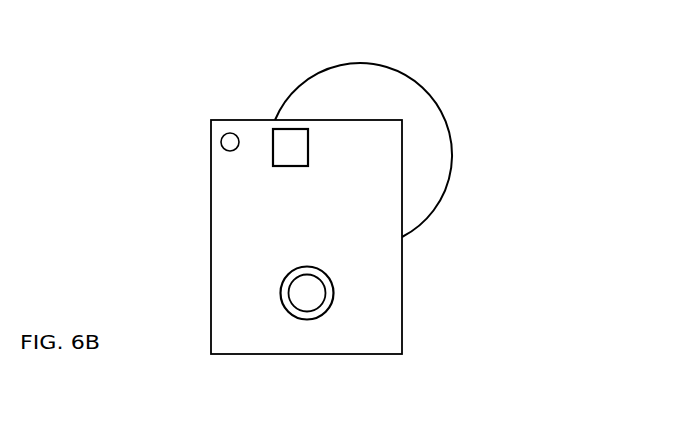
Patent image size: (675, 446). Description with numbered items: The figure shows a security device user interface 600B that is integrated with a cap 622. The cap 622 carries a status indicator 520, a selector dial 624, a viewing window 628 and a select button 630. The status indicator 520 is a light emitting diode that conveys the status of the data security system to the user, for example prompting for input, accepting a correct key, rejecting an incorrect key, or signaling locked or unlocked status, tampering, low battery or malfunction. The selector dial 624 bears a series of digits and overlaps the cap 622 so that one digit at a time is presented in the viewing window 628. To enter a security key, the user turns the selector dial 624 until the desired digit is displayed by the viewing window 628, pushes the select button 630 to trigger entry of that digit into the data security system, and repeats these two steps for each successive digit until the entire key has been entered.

The user interface 600B is at (536, 77).
The status indicator 520 is at (223, 147).
The cap 622 is at (211, 215).
The selector dial 624 is at (450, 135).
The viewing window 628 is at (273, 148).
The select button 630 is at (300, 320).